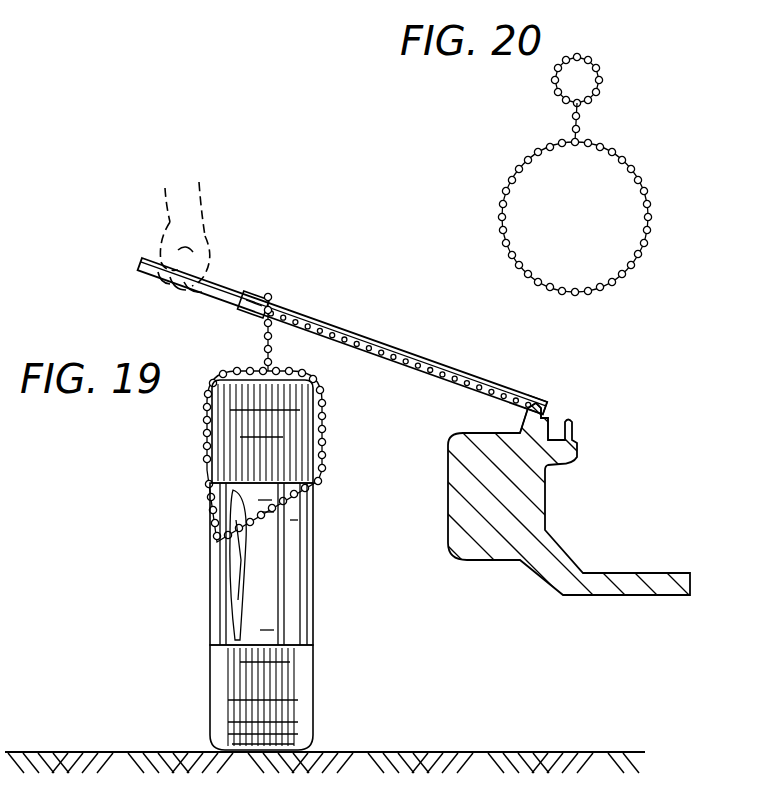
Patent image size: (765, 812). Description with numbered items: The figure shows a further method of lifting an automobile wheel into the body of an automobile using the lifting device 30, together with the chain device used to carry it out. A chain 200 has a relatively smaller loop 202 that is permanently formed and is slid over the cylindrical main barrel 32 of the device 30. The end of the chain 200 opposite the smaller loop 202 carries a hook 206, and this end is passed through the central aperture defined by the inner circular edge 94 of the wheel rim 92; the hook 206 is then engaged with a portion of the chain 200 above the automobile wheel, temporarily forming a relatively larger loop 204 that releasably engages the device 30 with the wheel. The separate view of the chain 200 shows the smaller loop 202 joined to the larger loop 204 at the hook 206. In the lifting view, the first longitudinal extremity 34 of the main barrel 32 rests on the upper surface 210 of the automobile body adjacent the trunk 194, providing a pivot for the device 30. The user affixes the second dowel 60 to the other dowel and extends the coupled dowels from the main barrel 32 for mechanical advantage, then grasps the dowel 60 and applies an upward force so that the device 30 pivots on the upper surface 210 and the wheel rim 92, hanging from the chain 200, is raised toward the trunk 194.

In FIG. 19, the device 30 is at (436, 337).
In FIG. 19, the main barrel 32 is at (353, 330).
In FIG. 19, the first longitudinal extremity 34 is at (533, 386).
In FIG. 19, the second dowel 60 is at (192, 290).
In FIG. 19, the wheel rim 92 is at (243, 637).
In FIG. 19, the inner circular edge 94 is at (232, 568).
In FIG. 19, the trunk 194 is at (632, 514).
In FIG. 20, the chain 200 is at (482, 181).
In FIG. 19, the chain 200 is at (257, 342).
In FIG. 20, the relatively smaller loop 202 is at (591, 63).
In FIG. 19, the relatively smaller loop 202 is at (292, 254).
In FIG. 20, the relatively larger loop 204 is at (616, 165).
In FIG. 19, the relatively larger loop 204 is at (205, 432).
In FIG. 20, the hook 206 is at (574, 152).
In FIG. 19, the upper surface of the automobile body 210 is at (549, 405).